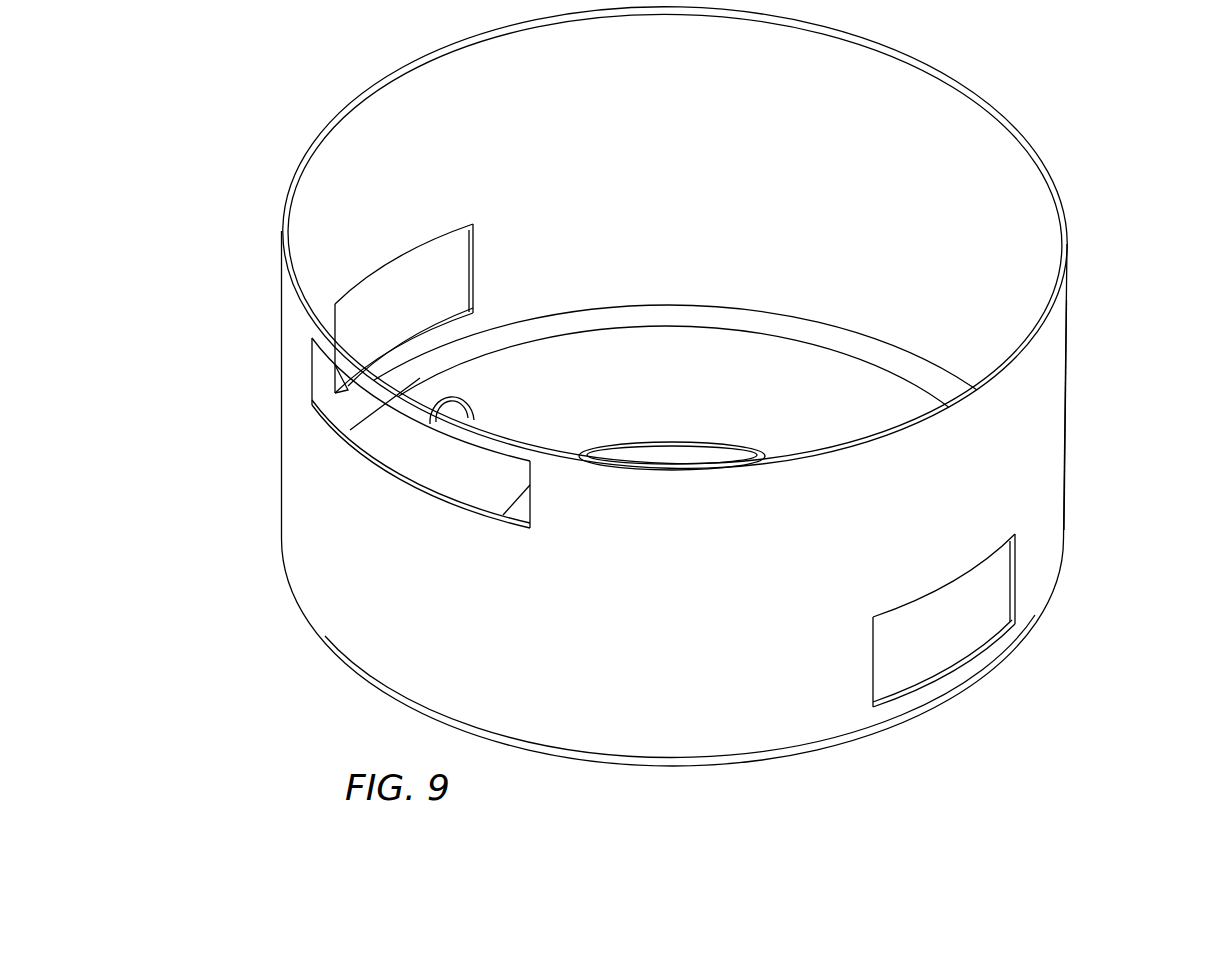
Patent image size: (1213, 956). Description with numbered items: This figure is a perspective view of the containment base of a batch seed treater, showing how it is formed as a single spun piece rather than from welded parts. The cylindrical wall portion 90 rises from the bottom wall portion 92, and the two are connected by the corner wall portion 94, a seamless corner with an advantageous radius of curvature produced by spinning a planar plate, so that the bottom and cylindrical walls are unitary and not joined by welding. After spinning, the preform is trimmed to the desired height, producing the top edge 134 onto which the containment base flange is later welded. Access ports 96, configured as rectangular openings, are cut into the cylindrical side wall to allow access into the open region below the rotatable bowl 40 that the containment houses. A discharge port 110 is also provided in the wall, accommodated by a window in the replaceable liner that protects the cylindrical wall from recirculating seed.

The rotatable bowl 40 is at (1070, 343).
The top edge 134 is at (1068, 253).
The cylindrical wall portion 90 is at (1033, 472).
The bottom wall portion 92 is at (641, 402).
The corner wall portion 94 is at (985, 650).
The access ports 96 is at (960, 640).
The discharge port 110 is at (400, 435).